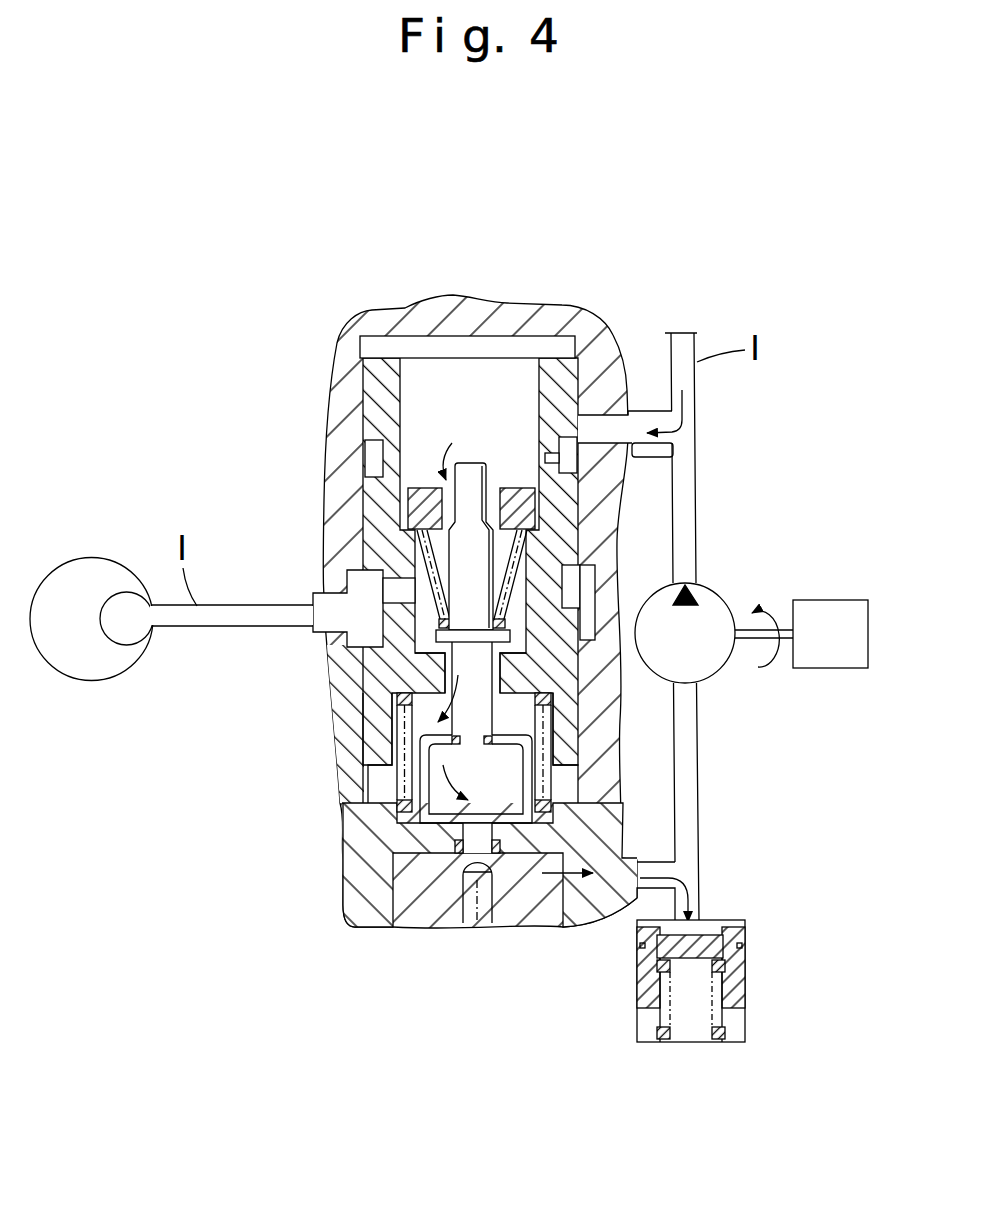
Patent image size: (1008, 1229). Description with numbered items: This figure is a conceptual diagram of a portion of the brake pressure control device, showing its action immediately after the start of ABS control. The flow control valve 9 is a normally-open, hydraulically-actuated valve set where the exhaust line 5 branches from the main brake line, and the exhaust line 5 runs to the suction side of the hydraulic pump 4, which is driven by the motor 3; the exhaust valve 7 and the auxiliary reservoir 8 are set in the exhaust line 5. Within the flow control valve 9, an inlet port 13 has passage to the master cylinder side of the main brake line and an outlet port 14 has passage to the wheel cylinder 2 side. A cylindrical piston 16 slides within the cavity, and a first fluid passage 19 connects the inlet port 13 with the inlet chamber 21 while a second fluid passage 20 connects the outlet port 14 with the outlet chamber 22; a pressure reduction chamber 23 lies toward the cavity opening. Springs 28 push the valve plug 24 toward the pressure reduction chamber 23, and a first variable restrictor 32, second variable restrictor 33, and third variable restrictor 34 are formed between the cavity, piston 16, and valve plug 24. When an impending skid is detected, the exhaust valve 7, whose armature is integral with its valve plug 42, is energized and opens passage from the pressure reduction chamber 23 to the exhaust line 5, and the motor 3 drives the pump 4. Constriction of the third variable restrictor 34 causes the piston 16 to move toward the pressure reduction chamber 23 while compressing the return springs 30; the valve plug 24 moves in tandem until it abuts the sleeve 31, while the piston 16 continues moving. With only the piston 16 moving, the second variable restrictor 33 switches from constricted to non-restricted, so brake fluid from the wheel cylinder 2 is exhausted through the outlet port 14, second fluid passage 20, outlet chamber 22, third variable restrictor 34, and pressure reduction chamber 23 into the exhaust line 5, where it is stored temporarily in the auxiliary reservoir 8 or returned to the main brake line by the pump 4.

The wheel cylinder 2 is at (130, 595).
The motor 3 is at (838, 600).
The hydraulic pump 4 is at (717, 598).
The exhaust line 5 is at (700, 792).
The exhaust valve 7 is at (400, 930).
The auxiliary reservoir 8 is at (745, 985).
The flow control valve 9 is at (578, 294).
The inlet port 13 is at (627, 453).
The outlet port 14 is at (345, 574).
The piston 16 is at (378, 334).
The first fluid passage 19 is at (580, 478).
The second fluid passage 20 is at (350, 642).
The inlet chamber 21 is at (418, 400).
The outlet chamber 22 is at (418, 545).
The pressure reduction chamber 23 is at (385, 786).
The valve plug 24 is at (477, 462).
The springs 28 is at (578, 556).
The return springs 30 is at (555, 695).
The sleeve 31 is at (535, 722).
The first variable restrictor 32 is at (598, 410).
The second variable restrictor 33 is at (430, 508).
The third variable restrictor 34 is at (440, 665).
The valve plug 42 is at (490, 895).